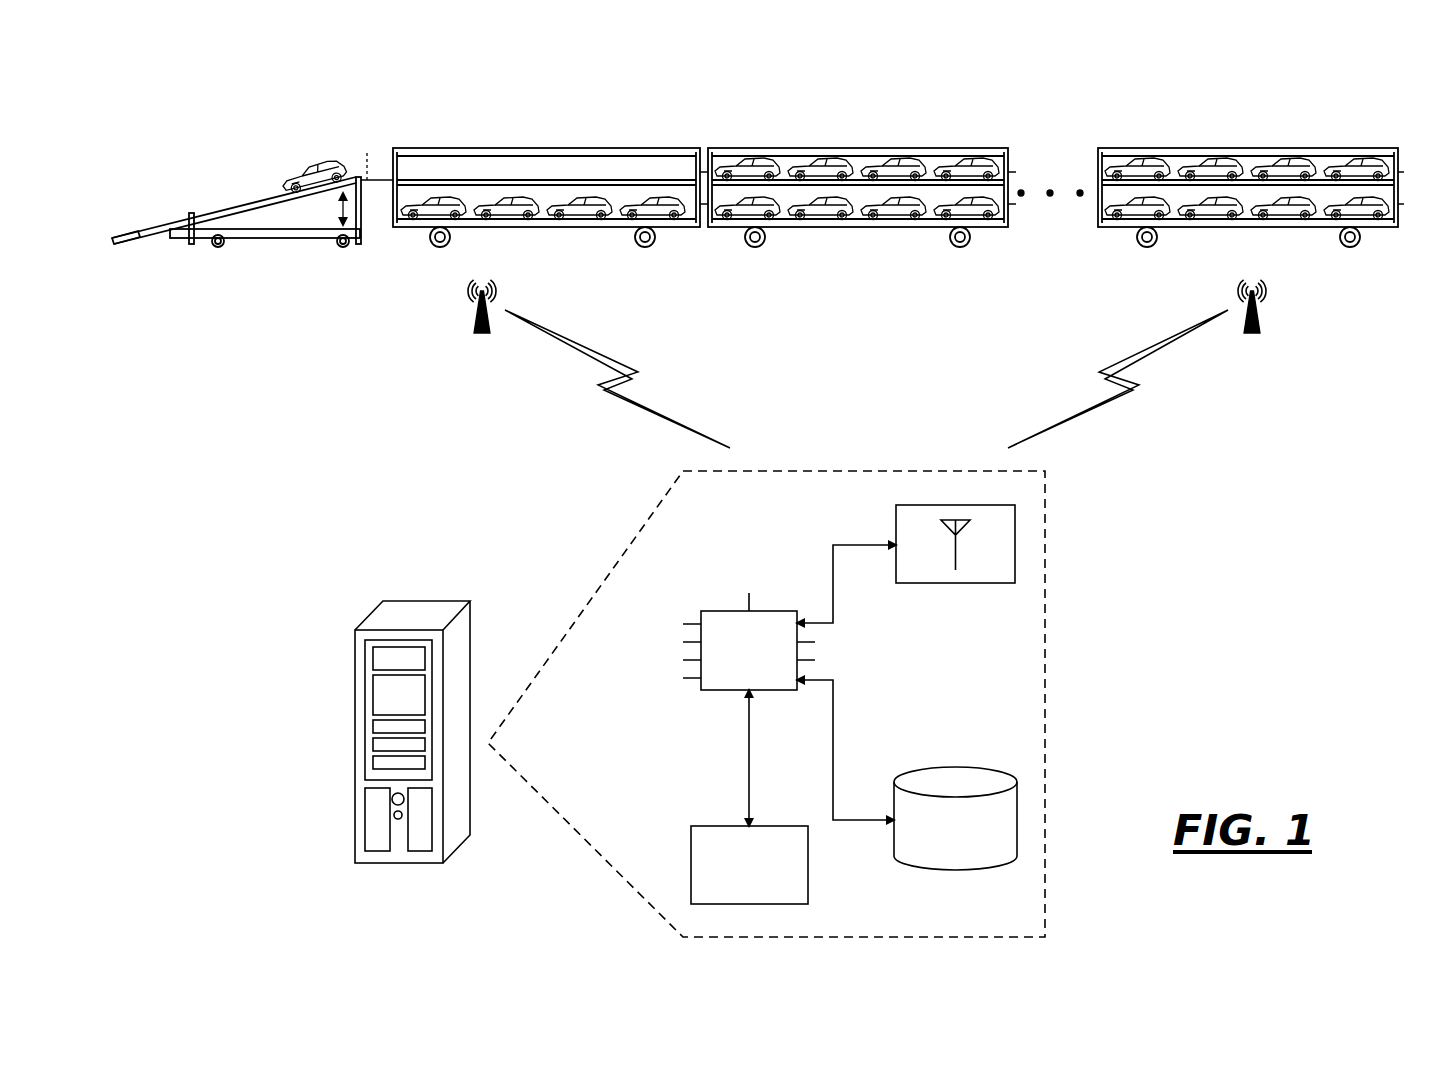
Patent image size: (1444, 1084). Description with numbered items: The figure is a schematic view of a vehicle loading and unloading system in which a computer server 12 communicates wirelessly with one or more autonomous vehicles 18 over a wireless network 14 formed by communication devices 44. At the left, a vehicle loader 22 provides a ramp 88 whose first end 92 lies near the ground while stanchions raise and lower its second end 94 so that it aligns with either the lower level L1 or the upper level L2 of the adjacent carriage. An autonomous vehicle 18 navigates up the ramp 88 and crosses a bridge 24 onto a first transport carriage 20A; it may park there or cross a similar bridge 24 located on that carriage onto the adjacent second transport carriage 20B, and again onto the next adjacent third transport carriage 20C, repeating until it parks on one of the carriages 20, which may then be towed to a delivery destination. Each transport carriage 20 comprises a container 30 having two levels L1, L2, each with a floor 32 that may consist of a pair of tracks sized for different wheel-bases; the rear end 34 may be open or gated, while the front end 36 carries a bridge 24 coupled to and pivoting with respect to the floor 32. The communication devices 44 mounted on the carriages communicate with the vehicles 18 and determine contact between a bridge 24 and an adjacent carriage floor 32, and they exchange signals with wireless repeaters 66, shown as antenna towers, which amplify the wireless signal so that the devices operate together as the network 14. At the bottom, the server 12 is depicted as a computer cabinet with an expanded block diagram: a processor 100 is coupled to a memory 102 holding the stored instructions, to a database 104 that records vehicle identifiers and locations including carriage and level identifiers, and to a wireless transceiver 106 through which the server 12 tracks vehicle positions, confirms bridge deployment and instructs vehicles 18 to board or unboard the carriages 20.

The computer server 12 is at (403, 592).
The wireless network 14 is at (1322, 282).
The autonomous vehicle 18 is at (305, 171).
The transport carriage 20 is at (595, 232).
The first transport carriage 20A is at (578, 149).
The second transport carriage 20B is at (838, 149).
The third transport carriage 20C is at (1235, 149).
The vehicle loader 22 is at (262, 248).
The bridge 24 is at (384, 174).
The container 30 is at (440, 149).
The floor 32 is at (603, 181).
The rear end 34 is at (393, 160).
The front end 36 is at (697, 160).
The communication device 44 is at (378, 190).
The wireless repeater 66 is at (479, 334).
The ramp 88 is at (215, 213).
The first end 92 is at (130, 233).
The second end 94 is at (372, 244).
The processor 100 is at (741, 665).
The memory 102 is at (741, 885).
The database 104 is at (947, 845).
The wireless transceiver 106 is at (925, 585).
The lower level L1 is at (455, 179).
The upper level L2 is at (400, 220).